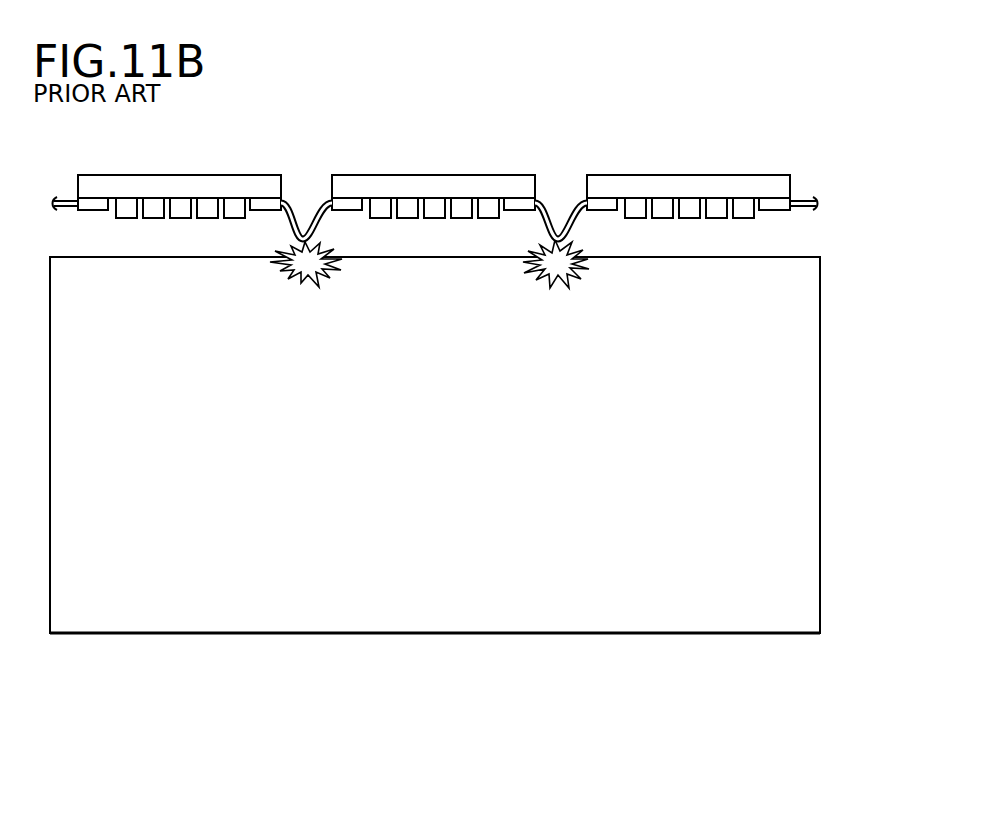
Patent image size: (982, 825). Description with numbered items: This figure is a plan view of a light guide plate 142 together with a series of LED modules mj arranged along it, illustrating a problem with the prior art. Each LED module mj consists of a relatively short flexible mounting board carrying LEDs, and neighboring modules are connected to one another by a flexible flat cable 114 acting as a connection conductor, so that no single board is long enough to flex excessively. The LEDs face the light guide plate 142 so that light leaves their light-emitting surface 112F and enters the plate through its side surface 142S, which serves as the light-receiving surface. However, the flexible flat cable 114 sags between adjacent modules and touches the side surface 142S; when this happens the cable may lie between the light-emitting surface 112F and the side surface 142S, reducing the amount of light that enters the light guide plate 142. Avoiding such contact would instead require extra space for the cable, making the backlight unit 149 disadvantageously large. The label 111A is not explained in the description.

The LED module mj is at (282, 156).
The semiconductor chip 111A is at (790, 194).
The light-emitting surface 112F is at (748, 219).
The flexible flat cable 114 is at (305, 228).
The light guide plate 142 is at (820, 634).
The side surface 142S is at (800, 257).
The backlight unit 149 is at (629, 664).